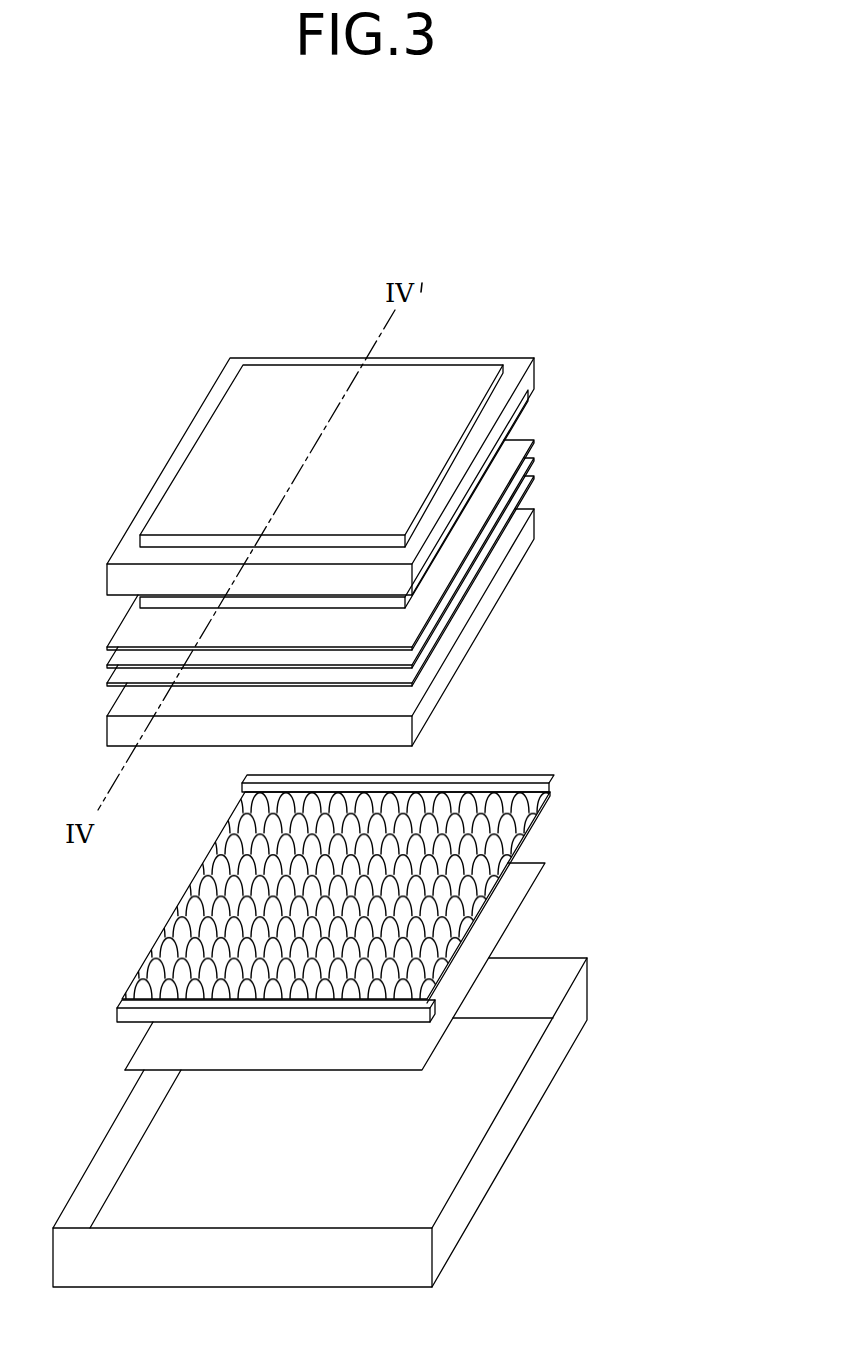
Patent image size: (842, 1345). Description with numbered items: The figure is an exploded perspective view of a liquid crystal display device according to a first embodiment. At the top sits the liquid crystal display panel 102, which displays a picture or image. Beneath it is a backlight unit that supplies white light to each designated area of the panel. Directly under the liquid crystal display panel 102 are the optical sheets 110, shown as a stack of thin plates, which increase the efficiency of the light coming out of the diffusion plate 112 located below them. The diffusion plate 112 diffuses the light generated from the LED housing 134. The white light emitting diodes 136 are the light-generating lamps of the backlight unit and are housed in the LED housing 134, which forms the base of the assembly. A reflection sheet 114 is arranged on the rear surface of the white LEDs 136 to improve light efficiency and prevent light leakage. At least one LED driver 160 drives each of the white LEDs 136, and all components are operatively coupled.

The liquid crystal display panel 102 is at (523, 388).
The optical sheets 110 is at (547, 433).
The diffusion plate 112 is at (457, 655).
The reflection sheet 114 is at (515, 922).
The LED housing 134 is at (577, 1000).
The white light emitting diodes 136 is at (510, 845).
The LED driver 160 is at (548, 780).